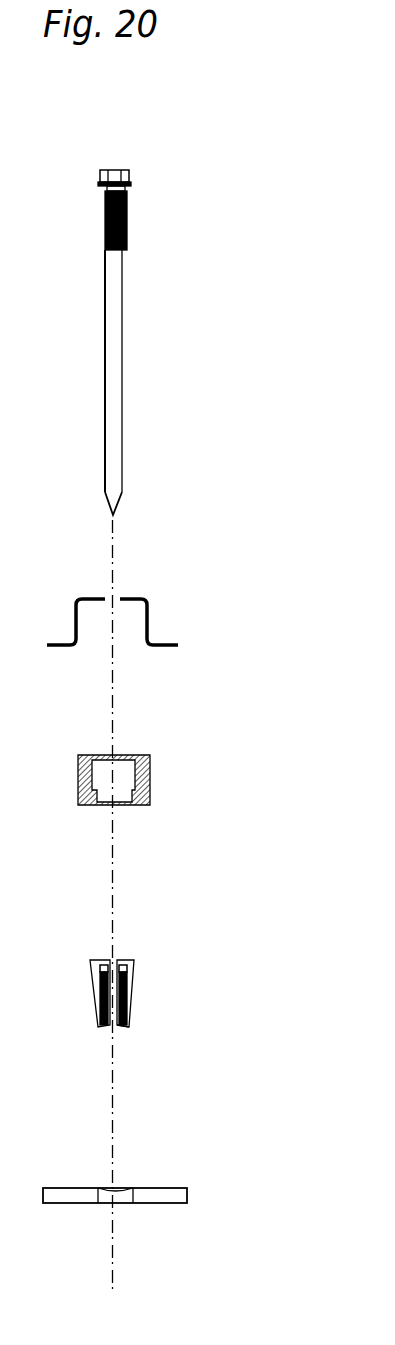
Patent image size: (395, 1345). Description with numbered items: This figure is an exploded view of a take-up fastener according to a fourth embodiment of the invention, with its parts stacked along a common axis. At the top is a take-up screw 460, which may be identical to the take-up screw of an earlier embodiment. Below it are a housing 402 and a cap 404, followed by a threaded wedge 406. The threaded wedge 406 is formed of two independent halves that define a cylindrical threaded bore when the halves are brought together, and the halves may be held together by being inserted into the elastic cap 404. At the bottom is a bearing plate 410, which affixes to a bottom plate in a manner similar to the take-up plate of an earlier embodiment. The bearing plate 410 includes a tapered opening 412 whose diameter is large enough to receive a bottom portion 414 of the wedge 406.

The take-up screw 460 is at (122, 300).
The housing 402 is at (150, 621).
The cap 404 is at (151, 779).
The threaded wedge 406 is at (135, 976).
The bottom portion of wedge 414 is at (129, 1022).
The bearing plate 410 is at (168, 1190).
The tapered opening 412 is at (102, 1190).